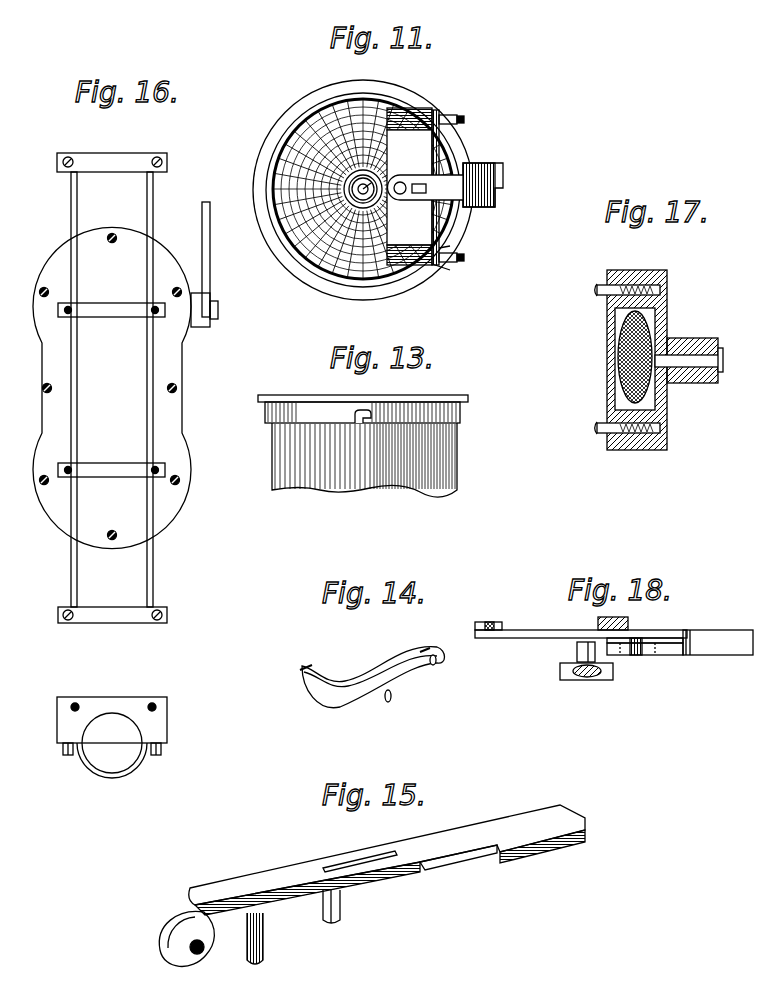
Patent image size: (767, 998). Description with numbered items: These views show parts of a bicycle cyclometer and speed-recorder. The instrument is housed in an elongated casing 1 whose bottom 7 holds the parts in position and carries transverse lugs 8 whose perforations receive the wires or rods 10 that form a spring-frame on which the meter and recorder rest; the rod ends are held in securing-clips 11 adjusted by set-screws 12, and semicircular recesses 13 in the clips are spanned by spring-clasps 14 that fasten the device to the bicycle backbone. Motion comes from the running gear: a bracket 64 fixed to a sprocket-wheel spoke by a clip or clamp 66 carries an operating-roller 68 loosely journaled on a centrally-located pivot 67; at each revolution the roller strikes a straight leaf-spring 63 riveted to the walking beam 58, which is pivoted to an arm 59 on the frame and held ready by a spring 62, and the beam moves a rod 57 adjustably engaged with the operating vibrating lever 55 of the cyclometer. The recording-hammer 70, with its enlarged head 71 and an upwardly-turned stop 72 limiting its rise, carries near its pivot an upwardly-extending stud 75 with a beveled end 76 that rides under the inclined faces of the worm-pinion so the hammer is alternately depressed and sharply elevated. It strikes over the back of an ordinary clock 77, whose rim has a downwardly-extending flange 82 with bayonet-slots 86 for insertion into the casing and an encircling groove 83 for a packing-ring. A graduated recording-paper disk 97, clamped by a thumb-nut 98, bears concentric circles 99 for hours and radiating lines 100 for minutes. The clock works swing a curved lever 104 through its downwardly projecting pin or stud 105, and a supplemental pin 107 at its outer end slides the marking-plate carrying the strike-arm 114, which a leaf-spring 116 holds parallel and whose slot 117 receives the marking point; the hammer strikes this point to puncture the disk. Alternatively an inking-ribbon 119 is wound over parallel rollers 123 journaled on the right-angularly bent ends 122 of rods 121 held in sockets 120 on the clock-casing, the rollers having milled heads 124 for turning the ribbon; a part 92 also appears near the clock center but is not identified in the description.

In FIG. 16, the elongated casing 1 is at (182, 418).
In FIG. 16, the bottom 7 is at (111, 387).
In FIG. 16, the transverse lugs 8 is at (113, 318).
In FIG. 16, the wires or rods 10 is at (71, 204).
In FIG. 16, the securing-clips 11 is at (130, 700).
In FIG. 16, the set-screws 12 is at (63, 750).
In FIG. 16, the semicircular recesses 13 is at (95, 752).
In FIG. 16, the spring-clasps 14 is at (112, 160).
In FIG. 16, the operating vibrating lever 55 is at (210, 238).
In FIG. 18, the rod 57 is at (492, 622).
In FIG. 18, the walking beam or lever 58 is at (645, 655).
In FIG. 18, the arm 59 is at (626, 620).
In FIG. 18, the spring 62 is at (657, 637).
In FIG. 18, the straight leaf-spring 63 is at (718, 642).
In FIG. 17, the bracket 64 is at (645, 360).
In FIG. 18, the bracket 64 is at (586, 679).
In FIG. 17, the clip or clamp 66 is at (613, 334).
In FIG. 18, the clip or clamp 66 is at (580, 679).
In FIG. 17, the centrally-located pivot 67 is at (698, 370).
In FIG. 17, the operating-roller 68 is at (706, 347).
In FIG. 18, the operating-roller 68 is at (577, 652).
In FIG. 15, the recording-hammer 70 is at (306, 864).
In FIG. 15, the enlarged head 71 is at (537, 840).
In FIG. 15, the upwardly-turned stop 72 is at (341, 906).
In FIG. 15, the upwardly-extending stud 75 is at (264, 936).
In FIG. 15, the beveled end 76 is at (250, 957).
In FIG. 11, the clock 77 is at (466, 143).
In FIG. 13, the clock 77 is at (364, 460).
In FIG. 13, the downwardly-extending flange 82 is at (460, 417).
In FIG. 13, the encircling groove 83 is at (468, 398).
In FIG. 13, the bayonet-slots 86 is at (357, 420).
In FIG. 11, the pivot 92 is at (401, 182).
In FIG. 11, the graduated recording-paper disk 97 is at (312, 272).
In FIG. 11, the thumb-nut 98 is at (372, 194).
In FIG. 11, the concentric circles 99 is at (276, 186).
In FIG. 11, the radiating lines 100 is at (285, 217).
In FIG. 14, the curved lever 104 is at (402, 682).
In FIG. 14, the pin or stud 105 is at (392, 699).
In FIG. 14, the supplemental pin or projection 107 is at (440, 660).
In FIG. 11, the strike-arm 114 is at (503, 189).
In FIG. 11, the leaf-spring 116 is at (366, 186).
In FIG. 11, the short longitudinally-disposed slot 117 is at (426, 188).
In FIG. 11, the inking-ribbon 119 is at (412, 221).
In FIG. 11, the sockets 120 is at (463, 119).
In FIG. 11, the rods 121 is at (461, 116).
In FIG. 11, the right-angularly bent ends 122 is at (441, 112).
In FIG. 11, the parallel rollers 123 is at (444, 262).
In FIG. 11, the milled heads 124 is at (452, 249).